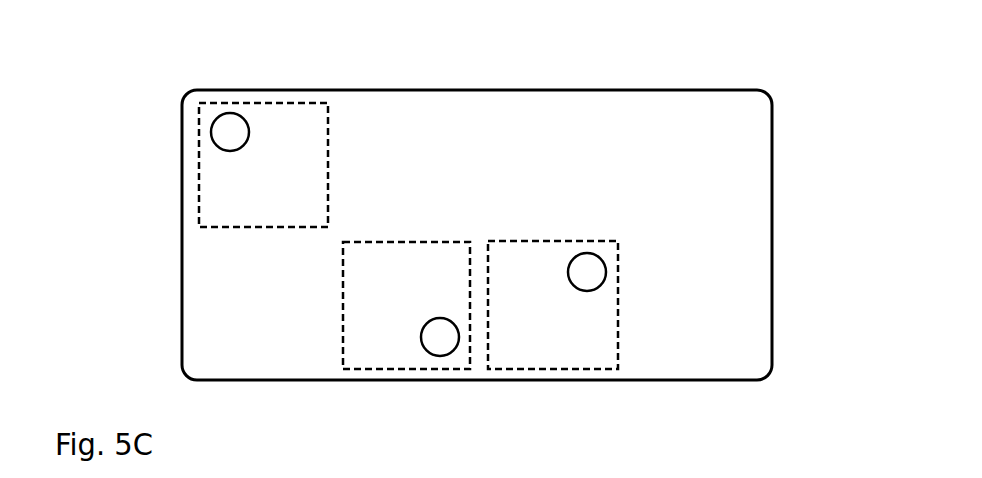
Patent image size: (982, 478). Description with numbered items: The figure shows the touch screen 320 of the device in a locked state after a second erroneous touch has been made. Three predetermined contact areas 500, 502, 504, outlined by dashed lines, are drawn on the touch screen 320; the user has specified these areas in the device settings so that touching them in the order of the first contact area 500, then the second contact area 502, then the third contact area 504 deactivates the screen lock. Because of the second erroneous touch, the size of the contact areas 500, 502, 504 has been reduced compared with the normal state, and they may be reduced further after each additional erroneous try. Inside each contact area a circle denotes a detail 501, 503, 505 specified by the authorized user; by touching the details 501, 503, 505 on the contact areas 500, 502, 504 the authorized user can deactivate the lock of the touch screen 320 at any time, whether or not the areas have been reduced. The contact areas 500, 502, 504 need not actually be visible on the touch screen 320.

The touch screen 320 is at (262, 89).
The contact area 500 is at (358, 369).
The detail 501 is at (440, 357).
The contact area 502 is at (198, 190).
The detail 503 is at (200, 122).
The contact area 504 is at (570, 369).
The detail 505 is at (570, 262).